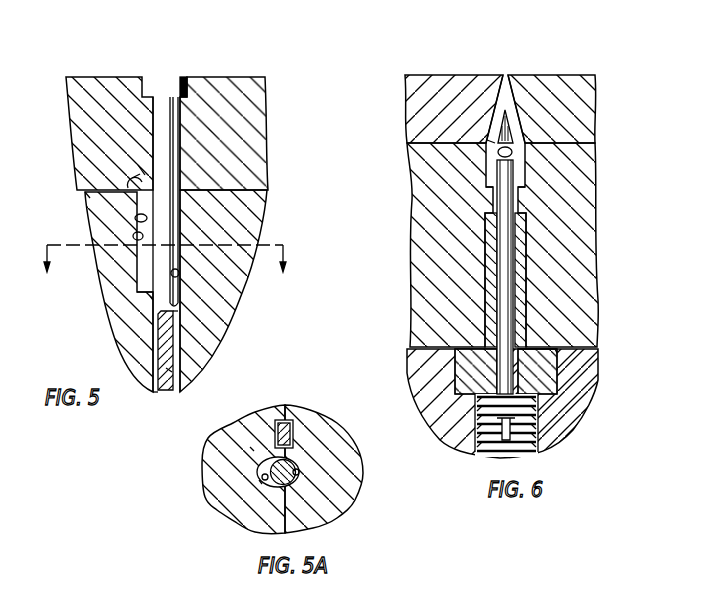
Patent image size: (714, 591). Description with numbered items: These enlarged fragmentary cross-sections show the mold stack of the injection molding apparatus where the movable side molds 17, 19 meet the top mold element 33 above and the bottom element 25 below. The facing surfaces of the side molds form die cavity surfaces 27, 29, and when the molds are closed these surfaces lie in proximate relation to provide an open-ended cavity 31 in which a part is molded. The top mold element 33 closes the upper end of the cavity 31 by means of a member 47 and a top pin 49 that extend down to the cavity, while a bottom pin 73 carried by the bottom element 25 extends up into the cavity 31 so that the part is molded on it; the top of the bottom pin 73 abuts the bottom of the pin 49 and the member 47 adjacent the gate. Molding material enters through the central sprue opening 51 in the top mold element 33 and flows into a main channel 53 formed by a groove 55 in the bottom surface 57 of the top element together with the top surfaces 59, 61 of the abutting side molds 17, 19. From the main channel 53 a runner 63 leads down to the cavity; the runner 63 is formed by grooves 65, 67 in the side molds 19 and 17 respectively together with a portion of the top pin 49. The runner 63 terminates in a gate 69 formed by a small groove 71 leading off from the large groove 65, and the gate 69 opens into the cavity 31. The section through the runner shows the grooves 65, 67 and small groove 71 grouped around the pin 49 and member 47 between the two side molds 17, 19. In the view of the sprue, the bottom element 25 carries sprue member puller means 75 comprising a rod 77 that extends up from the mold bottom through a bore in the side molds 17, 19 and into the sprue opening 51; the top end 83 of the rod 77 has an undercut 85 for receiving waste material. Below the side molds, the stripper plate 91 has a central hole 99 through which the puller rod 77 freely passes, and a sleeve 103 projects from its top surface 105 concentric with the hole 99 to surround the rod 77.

In FIG. 5, the side mold 17 is at (236, 303).
In FIG. 5A, the side mold 17 is at (352, 496).
In FIG. 6, the side mold 17 is at (598, 195).
In FIG. 5, the side mold 19 is at (145, 300).
In FIG. 5A, the side mold 19 is at (215, 508).
In FIG. 6, the side mold 19 is at (422, 262).
In FIG. 6, the bottom element 25 is at (437, 420).
In FIG. 5, the die cavity surface 27 is at (179, 347).
In FIG. 5, the die cavity surface 29 is at (158, 336).
In FIG. 5, the cavity 31 is at (155, 391).
In FIG. 5, the top mold element 33 is at (257, 104).
In FIG. 6, the top mold element 33 is at (592, 96).
In FIG. 5A, the member 47 is at (276, 428).
In FIG. 5, the top pin 49 is at (167, 100).
In FIG. 5A, the top pin 49 is at (288, 466).
In FIG. 6, the sprue opening 51 is at (517, 100).
In FIG. 5, the main channel 53 is at (142, 170).
In FIG. 5, the groove 55 is at (135, 176).
In FIG. 6, the groove 55 is at (494, 141).
In FIG. 5, the bottom surface 57 is at (85, 193).
In FIG. 5, the top surface 59 is at (268, 191).
In FIG. 5, the top surface 61 is at (128, 186).
In FIG. 5, the runner 63 is at (146, 221).
In FIG. 5A, the runner 63 is at (254, 451).
In FIG. 5, the groove 65 is at (52, 244).
In FIG. 5A, the groove 65 is at (259, 480).
In FIG. 5, the groove 67 is at (179, 274).
In FIG. 5A, the groove 67 is at (299, 472).
In FIG. 5, the gate 69 is at (148, 300).
In FIG. 5A, the gate 69 is at (260, 472).
In FIG. 5, the small groove 71 is at (152, 292).
In FIG. 5A, the small groove 71 is at (268, 487).
In FIG. 5, the bottom pin 73 is at (172, 371).
In FIG. 6, the sprue member puller means 75 is at (489, 178).
In FIG. 6, the rod 77 is at (490, 205).
In FIG. 6, the top end 83 is at (503, 108).
In FIG. 6, the undercut 85 is at (498, 151).
In FIG. 6, the stripper plate 91 is at (546, 374).
In FIG. 6, the central hole 99 is at (460, 366).
In FIG. 6, the sleeve 103 is at (522, 265).
In FIG. 6, the top surface 105 is at (553, 351).